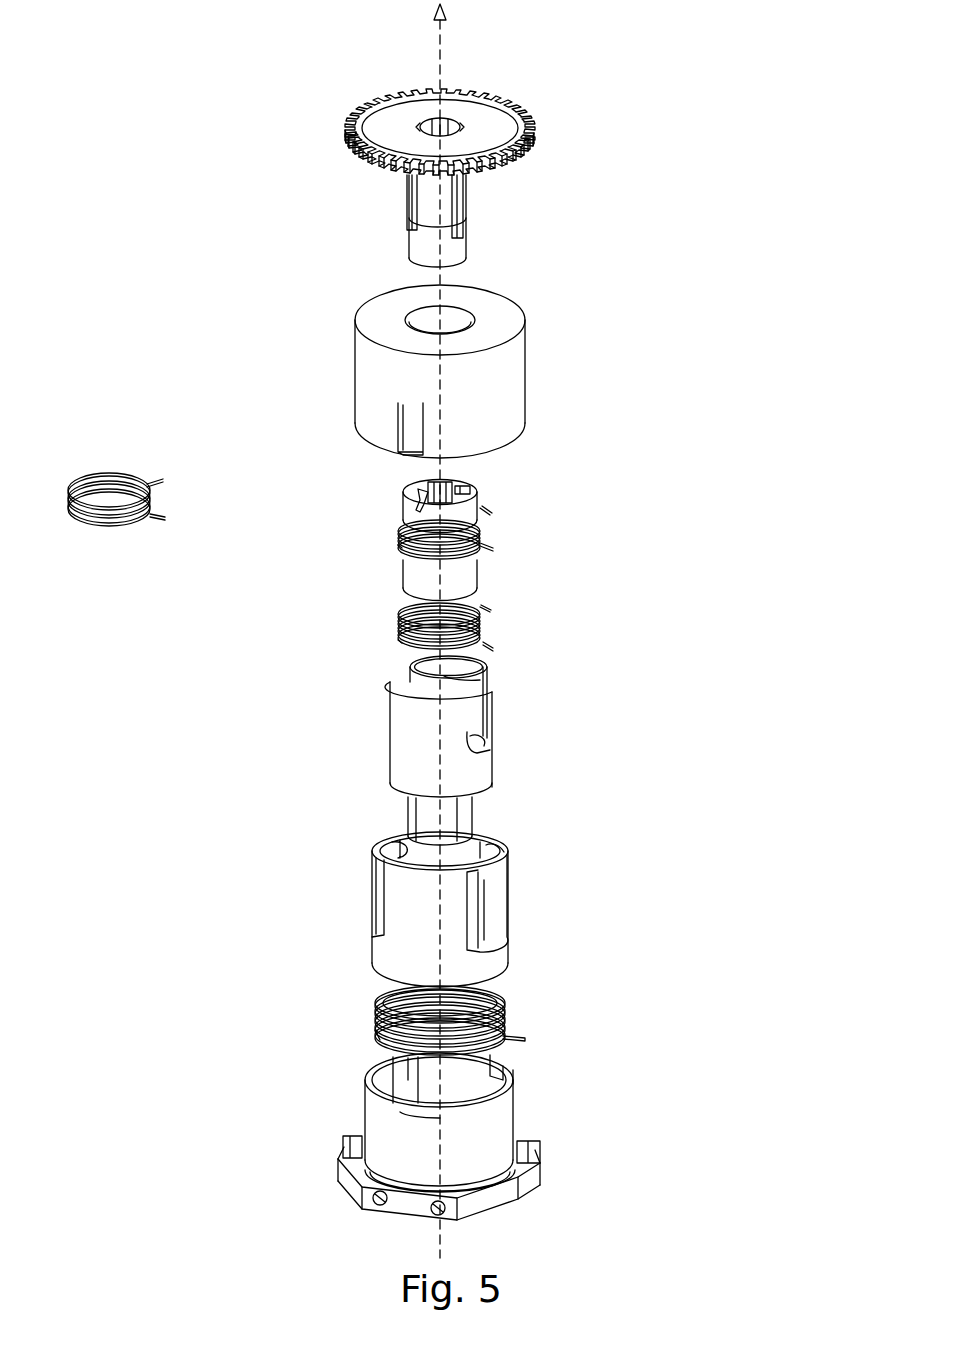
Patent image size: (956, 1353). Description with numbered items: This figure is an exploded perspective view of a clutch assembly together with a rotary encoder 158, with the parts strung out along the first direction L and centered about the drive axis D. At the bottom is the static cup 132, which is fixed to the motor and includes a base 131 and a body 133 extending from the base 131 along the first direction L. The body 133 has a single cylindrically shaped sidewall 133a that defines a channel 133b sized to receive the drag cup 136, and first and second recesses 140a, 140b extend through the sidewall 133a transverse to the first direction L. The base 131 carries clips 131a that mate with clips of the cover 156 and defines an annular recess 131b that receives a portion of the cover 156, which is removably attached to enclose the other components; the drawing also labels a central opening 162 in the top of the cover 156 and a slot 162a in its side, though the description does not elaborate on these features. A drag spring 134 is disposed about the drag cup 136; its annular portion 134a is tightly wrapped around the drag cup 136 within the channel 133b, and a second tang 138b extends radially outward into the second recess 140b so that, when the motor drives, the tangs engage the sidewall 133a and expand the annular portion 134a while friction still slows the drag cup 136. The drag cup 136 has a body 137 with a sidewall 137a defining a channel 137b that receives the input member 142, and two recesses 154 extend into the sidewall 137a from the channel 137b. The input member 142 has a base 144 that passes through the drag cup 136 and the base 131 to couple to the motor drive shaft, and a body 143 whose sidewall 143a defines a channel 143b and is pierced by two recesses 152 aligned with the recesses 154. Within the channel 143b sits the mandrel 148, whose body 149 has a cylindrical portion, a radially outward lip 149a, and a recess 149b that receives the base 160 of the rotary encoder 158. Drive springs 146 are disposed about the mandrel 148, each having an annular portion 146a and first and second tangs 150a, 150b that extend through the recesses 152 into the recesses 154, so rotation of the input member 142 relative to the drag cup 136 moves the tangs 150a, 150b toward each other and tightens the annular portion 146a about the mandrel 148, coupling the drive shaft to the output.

The first direction L is at (440, 53).
The axis D is at (440, 279).
The rotary encoder 158 is at (484, 125).
The base of the rotary encoder 160 is at (432, 198).
The cover 156 is at (451, 369).
The central opening 162 is at (470, 316).
The slot 162a is at (404, 432).
The body of the mandrel 149 is at (401, 534).
The lip 149a is at (472, 500).
The recess of the mandrel 149b is at (400, 497).
The mandrel 148 is at (412, 572).
The drive spring 146 is at (465, 582).
The annular portion of the drive spring 146a is at (398, 546).
The first tang 150a is at (491, 513).
The second tang 150b is at (491, 547).
The recess of the input member 152 is at (407, 668).
The input member 142 is at (427, 745).
The body of the input member 143 is at (459, 729).
The sidewall of the input member 143a is at (452, 740).
The channel of the input member 143b is at (458, 680).
The base of the input member 144 is at (432, 813).
The recess of the drag cup 154 is at (385, 842).
The drag cup 136 is at (446, 890).
The body of the drag cup 137 is at (540, 903).
The sidewall of the drag cup 137a is at (498, 890).
The channel of the drag cup 137b is at (374, 868).
The drag spring 134 is at (435, 1006).
The annular portion of the drag spring 134a is at (376, 1032).
The second tang 138b is at (520, 1038).
The static cup 132 is at (423, 1107).
The body of the static cup 133 is at (422, 1077).
The sidewall of the static cup 133a is at (415, 1115).
The channel of the static cup 133b is at (405, 1090).
The first recess 140a is at (393, 1080).
The second recess 140b is at (510, 1075).
The base of the static cup 131 is at (448, 1172).
The clips 131a is at (540, 1148).
The annular recess 131b is at (352, 1150).